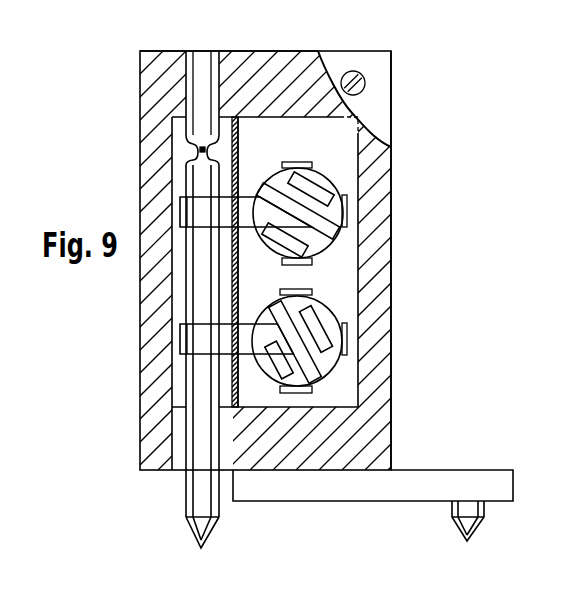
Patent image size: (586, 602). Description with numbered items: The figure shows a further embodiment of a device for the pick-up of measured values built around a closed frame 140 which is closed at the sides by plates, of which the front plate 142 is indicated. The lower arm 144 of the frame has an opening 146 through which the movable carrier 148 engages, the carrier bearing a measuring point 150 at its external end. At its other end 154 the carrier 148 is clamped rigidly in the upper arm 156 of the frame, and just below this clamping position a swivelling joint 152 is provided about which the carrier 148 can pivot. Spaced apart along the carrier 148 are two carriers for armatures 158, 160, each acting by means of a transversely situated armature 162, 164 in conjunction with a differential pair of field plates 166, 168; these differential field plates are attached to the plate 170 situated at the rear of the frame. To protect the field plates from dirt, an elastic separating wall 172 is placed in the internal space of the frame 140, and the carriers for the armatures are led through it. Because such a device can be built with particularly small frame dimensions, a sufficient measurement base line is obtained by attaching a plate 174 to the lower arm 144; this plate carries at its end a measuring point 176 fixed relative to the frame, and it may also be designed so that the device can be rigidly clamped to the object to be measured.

The frame 140 is at (398, 109).
The front plate 142 is at (330, 65).
The lower arm 144 is at (287, 455).
The opening 146 is at (177, 428).
The movable carrier 148 is at (200, 488).
The measuring point 150 is at (194, 526).
The swivelling joint 152 is at (200, 150).
The other end 154 is at (192, 93).
The upper arm 156 is at (168, 78).
The carrier for armature 158 is at (248, 199).
The carrier for armature 160 is at (247, 328).
The armature 162 is at (300, 212).
The armature 164 is at (305, 358).
The differential pair of field plates 166 is at (317, 243).
The differential pair of field plates 168 is at (327, 310).
The plate 170 is at (290, 125).
The elastic separating wall 172 is at (233, 378).
The plate 174 is at (429, 478).
The measuring point 176 is at (455, 523).